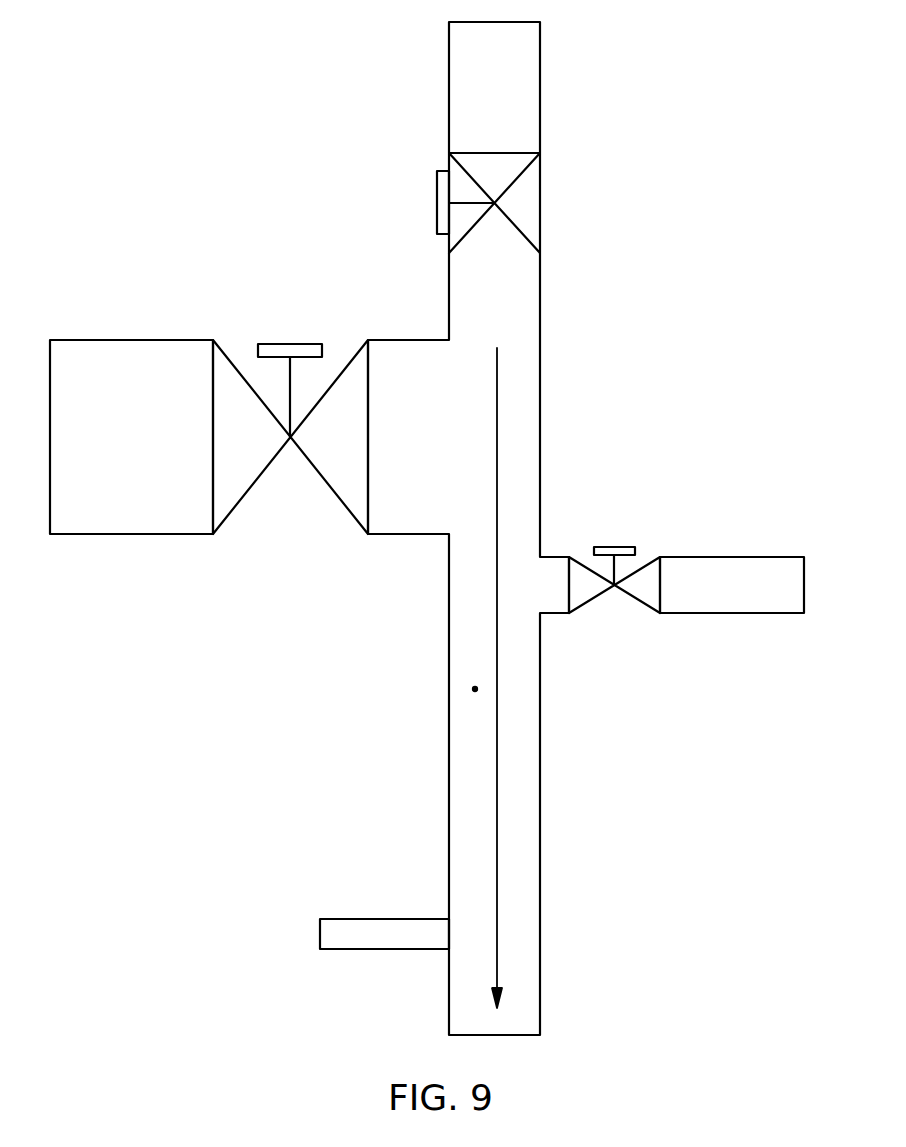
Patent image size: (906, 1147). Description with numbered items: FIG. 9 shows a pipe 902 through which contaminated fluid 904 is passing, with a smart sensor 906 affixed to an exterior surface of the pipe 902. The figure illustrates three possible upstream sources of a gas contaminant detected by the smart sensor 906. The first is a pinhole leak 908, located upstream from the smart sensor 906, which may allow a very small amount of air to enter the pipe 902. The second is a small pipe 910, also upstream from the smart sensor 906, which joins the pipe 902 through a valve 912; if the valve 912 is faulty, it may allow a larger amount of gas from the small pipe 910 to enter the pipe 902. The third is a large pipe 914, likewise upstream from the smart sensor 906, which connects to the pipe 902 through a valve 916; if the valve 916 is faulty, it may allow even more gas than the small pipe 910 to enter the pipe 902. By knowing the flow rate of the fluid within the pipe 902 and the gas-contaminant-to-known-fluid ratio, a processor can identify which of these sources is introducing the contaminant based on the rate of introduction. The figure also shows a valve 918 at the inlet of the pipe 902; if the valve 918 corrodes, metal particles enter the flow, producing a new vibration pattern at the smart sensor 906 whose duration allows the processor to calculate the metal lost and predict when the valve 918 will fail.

The pipe 902 is at (540, 290).
The contaminated fluid 904 is at (505, 312).
The smart sensor 906 is at (320, 934).
The pinhole leak 908 is at (470, 693).
The small pipe 910 is at (738, 568).
The valve 912 is at (622, 527).
The large pipe 914 is at (134, 348).
The valve 916 is at (284, 488).
The valve 918 is at (525, 200).